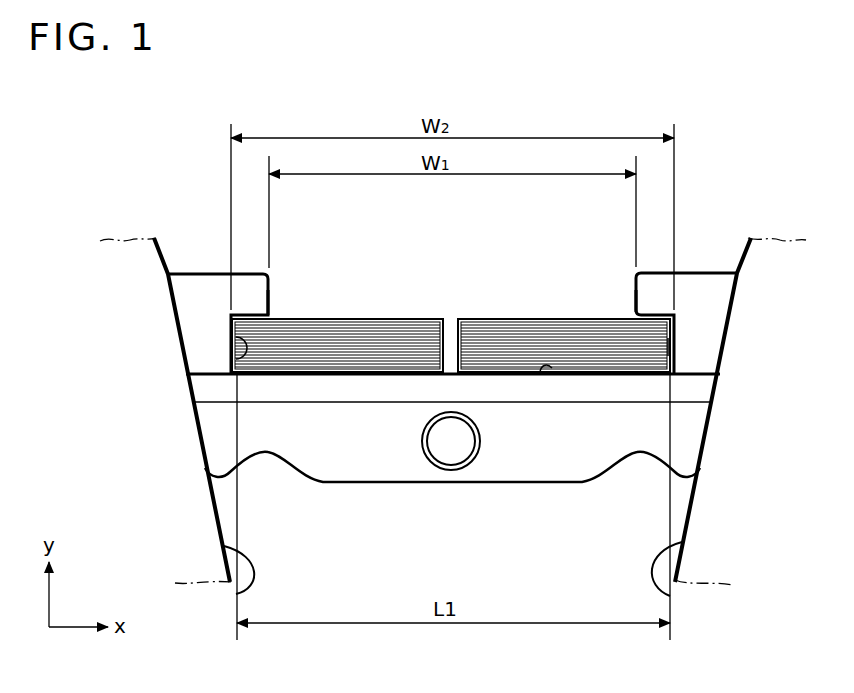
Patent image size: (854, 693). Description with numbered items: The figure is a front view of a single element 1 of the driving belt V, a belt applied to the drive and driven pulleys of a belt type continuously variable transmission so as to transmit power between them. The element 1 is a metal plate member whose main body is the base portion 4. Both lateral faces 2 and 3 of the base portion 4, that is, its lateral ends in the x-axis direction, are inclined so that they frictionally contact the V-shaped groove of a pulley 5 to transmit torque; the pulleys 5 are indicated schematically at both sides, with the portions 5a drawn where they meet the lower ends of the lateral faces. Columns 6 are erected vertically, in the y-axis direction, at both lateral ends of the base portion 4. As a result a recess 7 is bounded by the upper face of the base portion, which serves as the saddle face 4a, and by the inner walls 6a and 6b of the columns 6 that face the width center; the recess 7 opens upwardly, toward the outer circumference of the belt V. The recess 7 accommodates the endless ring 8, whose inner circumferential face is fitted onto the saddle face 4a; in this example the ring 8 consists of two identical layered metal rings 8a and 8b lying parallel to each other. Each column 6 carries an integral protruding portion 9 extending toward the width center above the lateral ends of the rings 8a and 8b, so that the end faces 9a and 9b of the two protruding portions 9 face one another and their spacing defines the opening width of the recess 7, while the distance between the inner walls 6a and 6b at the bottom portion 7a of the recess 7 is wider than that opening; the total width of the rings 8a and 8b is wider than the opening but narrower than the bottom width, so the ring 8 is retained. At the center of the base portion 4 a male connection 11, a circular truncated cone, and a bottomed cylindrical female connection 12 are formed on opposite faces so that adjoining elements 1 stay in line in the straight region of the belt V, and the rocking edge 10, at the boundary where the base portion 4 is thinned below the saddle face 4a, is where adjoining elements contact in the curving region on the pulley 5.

The element 1 is at (332, 500).
The lateral face 2 is at (710, 430).
The lateral face 3 is at (198, 433).
The base portion 4 is at (580, 460).
The saddle face 4a is at (552, 368).
The pulley 5 is at (195, 553).
The hook portion 5a is at (236, 594).
The column 6 is at (200, 315).
The inner wall 6a is at (237, 354).
The inner wall 6b is at (657, 346).
The recess 7 is at (419, 295).
The bottom portion 7a is at (452, 372).
The ring 8 is at (485, 295).
The ring 8a is at (351, 334).
The ring 8b is at (565, 332).
The protruding portion 9 is at (258, 297).
The end face 9a is at (270, 293).
The end face 9b is at (635, 290).
The rocking edge 10 is at (385, 402).
The male connection 11 is at (447, 443).
The female connection 12 is at (458, 495).
The driving belt V is at (714, 167).